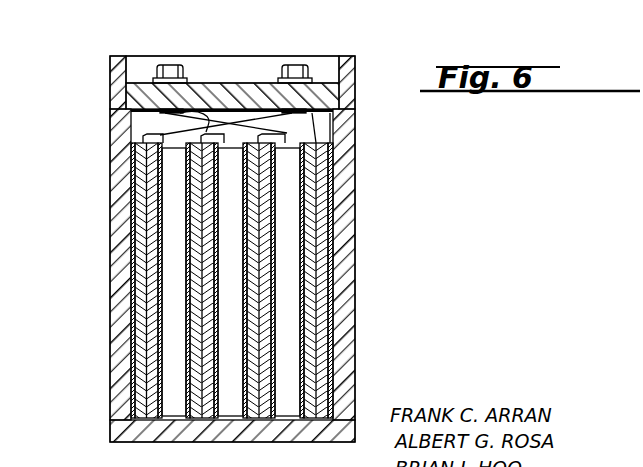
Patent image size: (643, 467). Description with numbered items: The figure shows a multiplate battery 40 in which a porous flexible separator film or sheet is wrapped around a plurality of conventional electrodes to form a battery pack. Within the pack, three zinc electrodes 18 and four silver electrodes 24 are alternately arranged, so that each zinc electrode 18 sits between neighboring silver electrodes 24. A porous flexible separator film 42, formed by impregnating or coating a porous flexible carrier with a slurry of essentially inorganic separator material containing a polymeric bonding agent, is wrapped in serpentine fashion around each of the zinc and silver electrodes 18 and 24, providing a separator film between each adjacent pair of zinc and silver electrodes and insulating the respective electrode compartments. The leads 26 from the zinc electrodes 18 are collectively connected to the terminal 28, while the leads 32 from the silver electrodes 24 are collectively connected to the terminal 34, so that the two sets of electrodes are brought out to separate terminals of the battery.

The zinc electrode 18 is at (172, 313).
The silver electrode 24 is at (200, 262).
The leads from the zinc electrodes 26 is at (230, 118).
The terminal 28 is at (164, 64).
The leads from the silver electrodes 32 is at (232, 129).
The terminal 34 is at (297, 64).
The multiplate battery 40 is at (374, 175).
The porous flexible separator film 42 is at (180, 386).